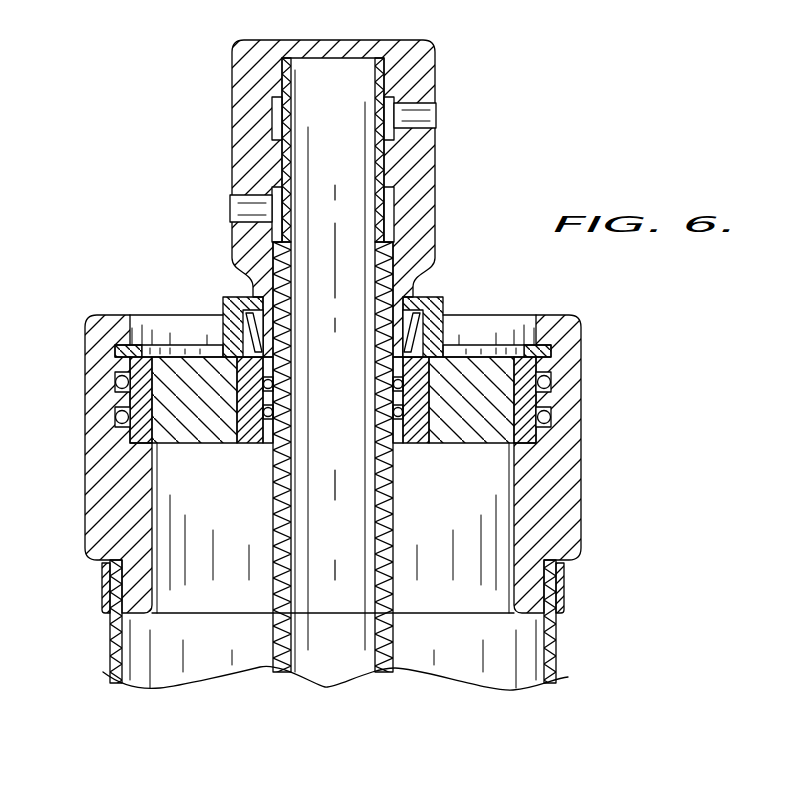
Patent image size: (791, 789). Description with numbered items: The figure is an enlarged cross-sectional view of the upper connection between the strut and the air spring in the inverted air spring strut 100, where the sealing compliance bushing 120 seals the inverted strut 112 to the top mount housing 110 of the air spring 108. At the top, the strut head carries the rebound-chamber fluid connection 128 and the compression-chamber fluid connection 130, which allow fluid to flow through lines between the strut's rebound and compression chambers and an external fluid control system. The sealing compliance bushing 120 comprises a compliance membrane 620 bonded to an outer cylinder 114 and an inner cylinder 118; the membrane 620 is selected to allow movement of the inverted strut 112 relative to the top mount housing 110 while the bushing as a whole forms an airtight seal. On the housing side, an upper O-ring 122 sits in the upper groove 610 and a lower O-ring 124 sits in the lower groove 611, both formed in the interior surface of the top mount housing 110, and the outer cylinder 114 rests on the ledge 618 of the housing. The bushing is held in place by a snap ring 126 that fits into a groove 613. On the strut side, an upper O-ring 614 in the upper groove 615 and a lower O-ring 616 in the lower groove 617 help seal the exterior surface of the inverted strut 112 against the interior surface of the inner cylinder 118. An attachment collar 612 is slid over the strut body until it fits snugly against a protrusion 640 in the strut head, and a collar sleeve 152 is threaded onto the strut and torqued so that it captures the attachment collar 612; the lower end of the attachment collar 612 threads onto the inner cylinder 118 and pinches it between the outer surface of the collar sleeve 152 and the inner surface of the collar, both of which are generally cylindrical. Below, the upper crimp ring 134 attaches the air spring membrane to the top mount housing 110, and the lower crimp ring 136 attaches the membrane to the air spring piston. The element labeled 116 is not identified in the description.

The inverted air spring strut 100 is at (85, 107).
The air spring 108 is at (556, 645).
The top mount housing 110 is at (582, 453).
The inverted strut 112 is at (396, 40).
The outer cylinder 114 is at (128, 448).
The plate 116 is at (112, 350).
The inner cylinder 118 is at (222, 352).
The sealing compliance bushing 120 is at (233, 447).
The upper O-ring 122 is at (113, 383).
The lower O-ring 124 is at (113, 417).
The snap ring 126 is at (552, 352).
The rebound-chamber fluid connection 128 is at (437, 116).
The compression-chamber fluid connection 130 is at (231, 203).
The upper crimp ring 134 is at (565, 580).
The lower crimp ring 136 is at (330, 682).
The collar sleeve 152 is at (442, 330).
The upper groove 610 is at (552, 384).
The lower groove 611 is at (552, 417).
The attachment collar 612 is at (233, 297).
The groove 613 is at (118, 340).
The upper O-ring 614 is at (403, 390).
The upper groove 615 is at (272, 385).
The lower O-ring 616 is at (403, 418).
The lower groove 617 is at (272, 412).
The ledge 618 is at (535, 450).
The compliance membrane 620 is at (185, 446).
The protrusion 640 is at (400, 290).